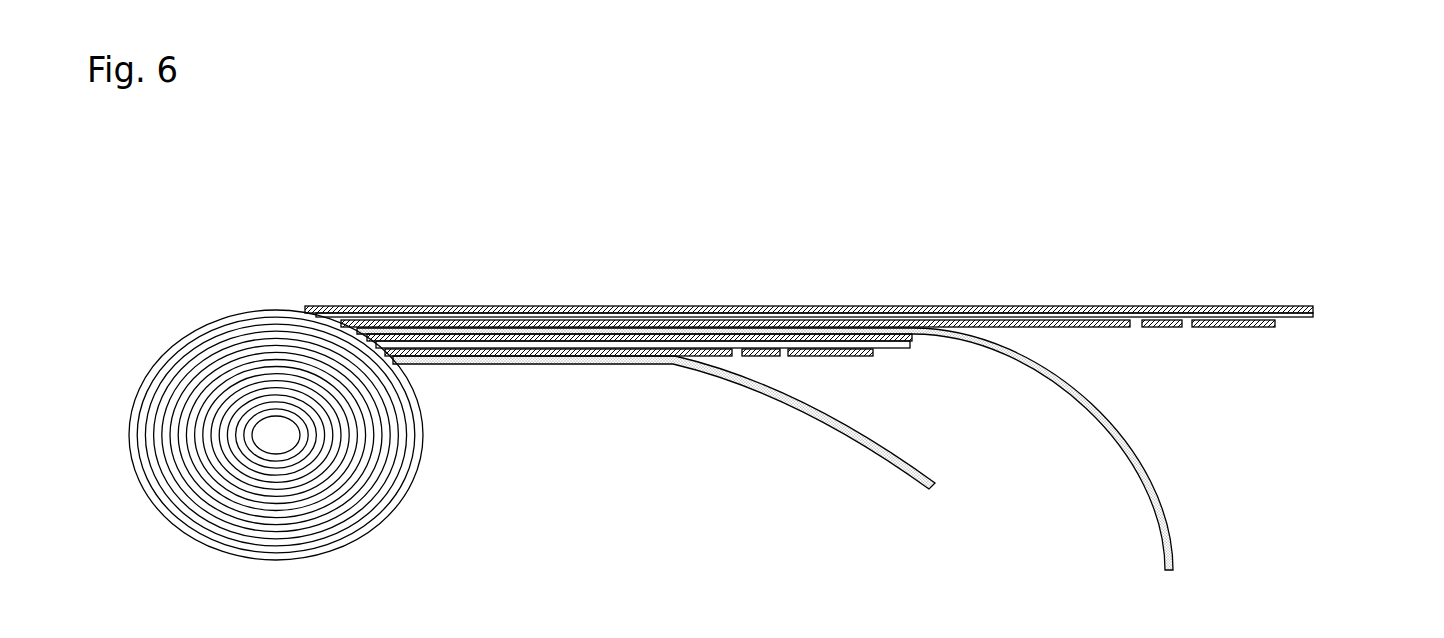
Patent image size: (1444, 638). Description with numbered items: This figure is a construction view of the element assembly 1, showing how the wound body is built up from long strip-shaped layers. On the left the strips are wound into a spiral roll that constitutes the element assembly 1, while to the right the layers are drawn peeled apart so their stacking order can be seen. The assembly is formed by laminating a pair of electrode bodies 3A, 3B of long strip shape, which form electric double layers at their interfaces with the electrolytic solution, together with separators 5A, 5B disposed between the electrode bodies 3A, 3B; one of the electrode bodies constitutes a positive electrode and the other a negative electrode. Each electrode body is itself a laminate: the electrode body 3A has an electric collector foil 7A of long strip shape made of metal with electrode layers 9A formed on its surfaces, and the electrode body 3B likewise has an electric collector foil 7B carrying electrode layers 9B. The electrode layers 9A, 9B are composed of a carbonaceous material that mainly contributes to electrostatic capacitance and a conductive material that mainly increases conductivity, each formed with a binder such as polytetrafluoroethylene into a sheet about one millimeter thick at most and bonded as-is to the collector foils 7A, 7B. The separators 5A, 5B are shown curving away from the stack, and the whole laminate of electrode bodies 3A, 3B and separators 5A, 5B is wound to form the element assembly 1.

The element assembly 1 is at (128, 305).
The electrode body 3A is at (688, 378).
The electrode body 3B is at (866, 315).
The separator 5A is at (920, 466).
The separator 5B is at (1134, 467).
The electric collector foil 7A is at (912, 344).
The electric collector foil 7B is at (1313, 315).
The electrode layer 9A is at (913, 341).
The electrode layer 9B is at (1313, 309).